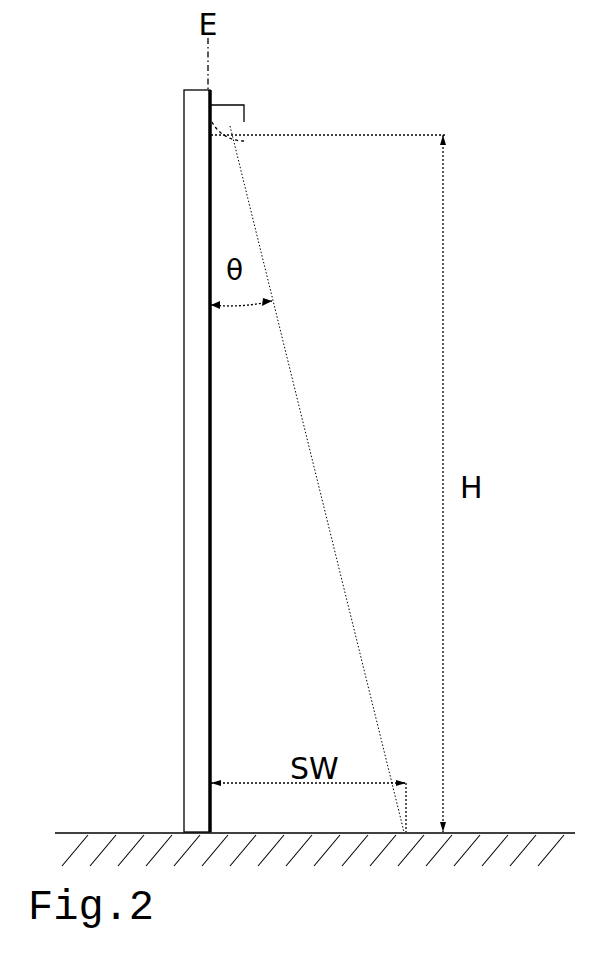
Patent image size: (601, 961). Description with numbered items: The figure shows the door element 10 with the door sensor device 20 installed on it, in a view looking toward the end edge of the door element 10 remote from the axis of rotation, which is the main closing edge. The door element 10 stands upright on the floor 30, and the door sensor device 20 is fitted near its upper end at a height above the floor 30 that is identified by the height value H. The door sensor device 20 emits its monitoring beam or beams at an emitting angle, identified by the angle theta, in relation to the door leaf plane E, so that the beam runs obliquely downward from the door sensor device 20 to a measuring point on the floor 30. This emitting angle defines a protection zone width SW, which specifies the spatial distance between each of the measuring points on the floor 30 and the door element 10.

The door element 10 is at (197, 546).
The door sensor device 20 is at (238, 123).
The floor 30 is at (480, 832).